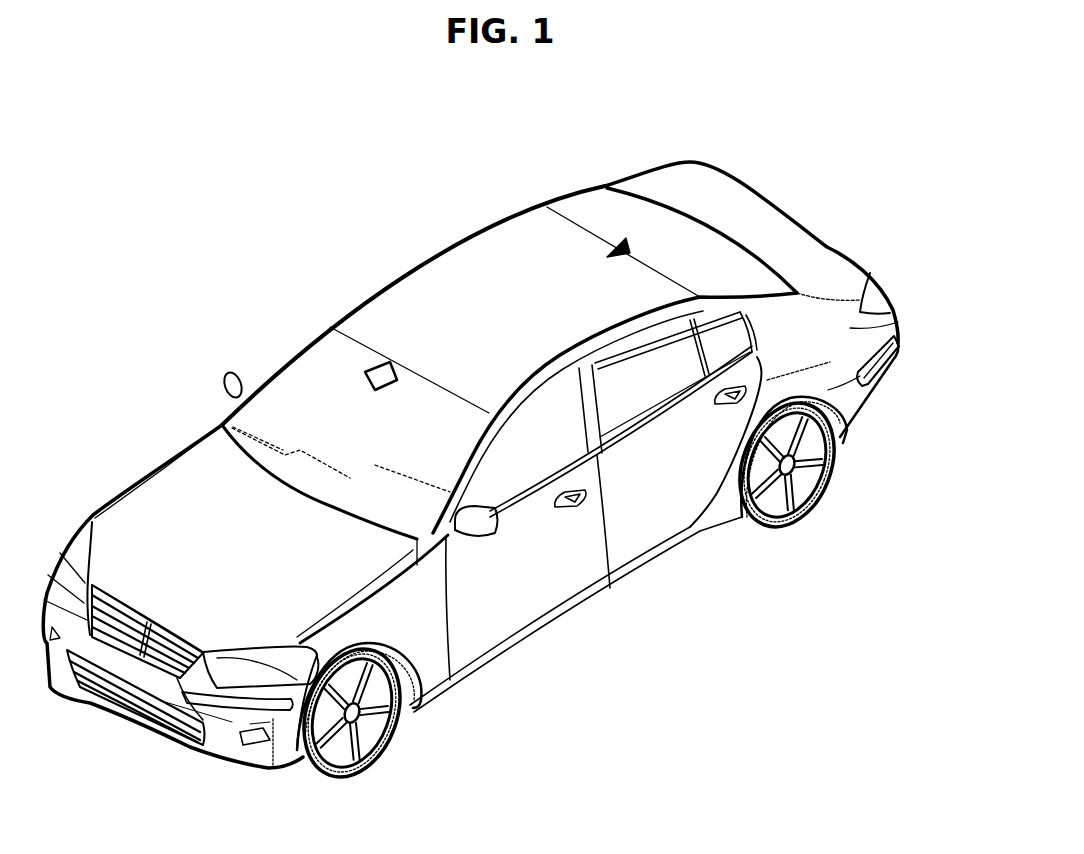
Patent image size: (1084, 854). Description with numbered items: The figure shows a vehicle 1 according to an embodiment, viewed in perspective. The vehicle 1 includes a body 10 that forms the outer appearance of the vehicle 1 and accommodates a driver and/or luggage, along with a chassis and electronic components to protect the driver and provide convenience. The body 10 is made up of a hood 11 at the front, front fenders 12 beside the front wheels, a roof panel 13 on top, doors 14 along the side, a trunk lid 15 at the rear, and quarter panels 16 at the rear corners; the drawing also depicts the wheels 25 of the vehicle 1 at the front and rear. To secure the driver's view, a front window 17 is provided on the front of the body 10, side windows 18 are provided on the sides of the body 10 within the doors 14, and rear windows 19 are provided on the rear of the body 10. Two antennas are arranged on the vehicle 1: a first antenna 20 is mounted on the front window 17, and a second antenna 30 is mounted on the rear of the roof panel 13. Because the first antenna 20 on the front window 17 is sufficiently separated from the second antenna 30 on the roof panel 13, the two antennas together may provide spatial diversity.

The vehicle 1 is at (298, 135).
The body 10 is at (428, 258).
The hood 11 is at (142, 507).
The front fenders 12 is at (427, 643).
The roof panel 13 is at (470, 265).
The doors 14 is at (543, 575).
The trunk lid 15 is at (793, 240).
The quarter panels 16 is at (900, 323).
The front window 17 is at (297, 377).
The side windows 18 is at (543, 455).
The rear windows 19 is at (703, 243).
The first antenna 20 is at (380, 360).
The wheel 25 is at (380, 733).
The second antenna 30 is at (620, 240).